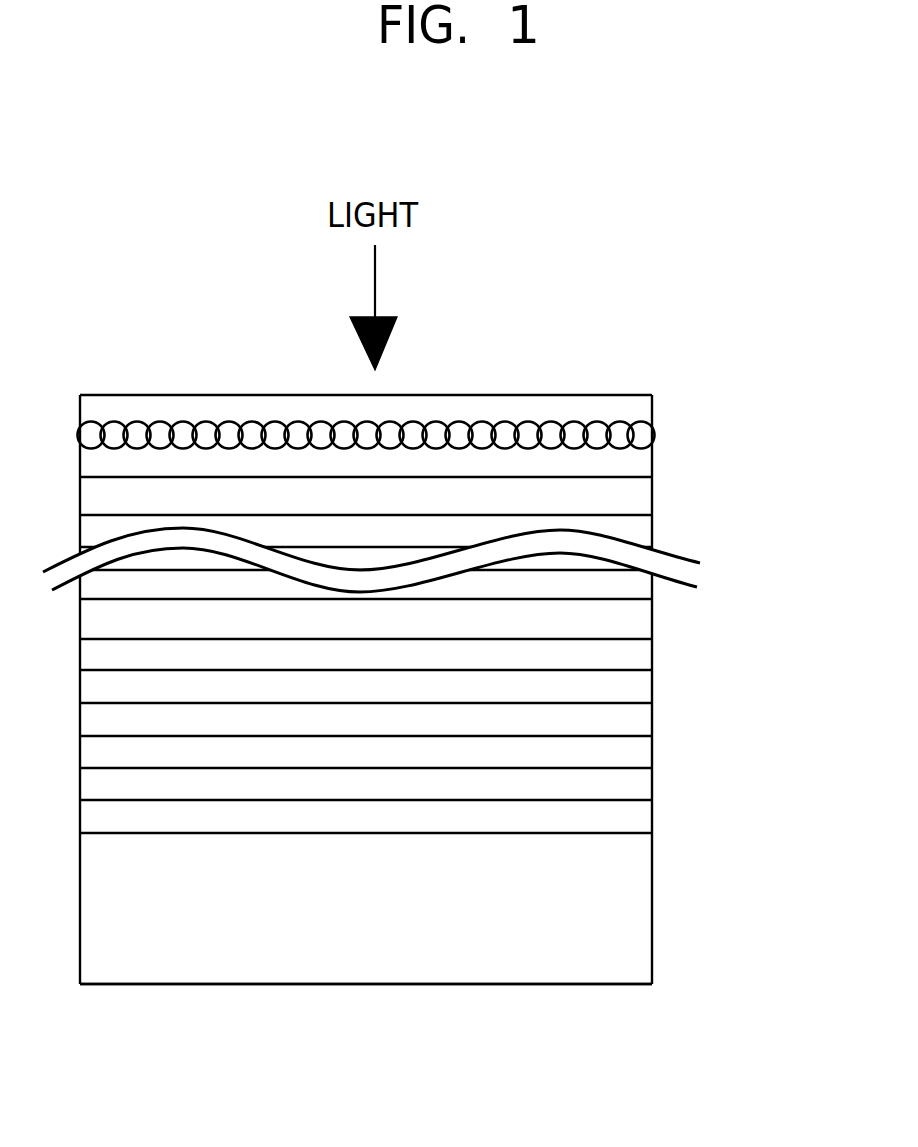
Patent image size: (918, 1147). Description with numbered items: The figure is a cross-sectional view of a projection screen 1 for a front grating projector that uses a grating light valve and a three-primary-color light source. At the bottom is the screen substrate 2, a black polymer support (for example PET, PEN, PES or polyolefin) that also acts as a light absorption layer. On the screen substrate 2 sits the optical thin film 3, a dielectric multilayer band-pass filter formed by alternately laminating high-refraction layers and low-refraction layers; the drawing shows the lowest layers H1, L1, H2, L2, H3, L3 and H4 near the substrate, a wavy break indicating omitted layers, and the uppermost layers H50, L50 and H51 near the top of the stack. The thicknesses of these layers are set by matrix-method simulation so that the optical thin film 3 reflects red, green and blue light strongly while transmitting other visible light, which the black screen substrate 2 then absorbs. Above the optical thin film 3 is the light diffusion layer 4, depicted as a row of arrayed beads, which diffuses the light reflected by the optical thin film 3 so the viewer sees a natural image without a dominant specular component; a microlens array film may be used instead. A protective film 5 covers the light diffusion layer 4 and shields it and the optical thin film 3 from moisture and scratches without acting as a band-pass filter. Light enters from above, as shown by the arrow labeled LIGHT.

The projection screen 1 is at (633, 237).
The screen substrate 2 is at (603, 928).
The optical thin film 3 is at (805, 857).
The light diffusion layer 4 is at (643, 442).
The protective film 5 is at (608, 402).
The high-refraction layer H1 is at (623, 818).
The high-refraction layer H2 is at (633, 753).
The high-refraction layer H3 is at (640, 690).
The high-refraction layer H4 is at (635, 622).
The high-refraction layer H50 is at (640, 532).
The high-refraction layer H51 is at (633, 468).
The low-refraction layer L1 is at (633, 790).
The low-refraction layer L2 is at (633, 722).
The low-refraction layer L3 is at (632, 657).
The low-refraction layer L50 is at (637, 497).